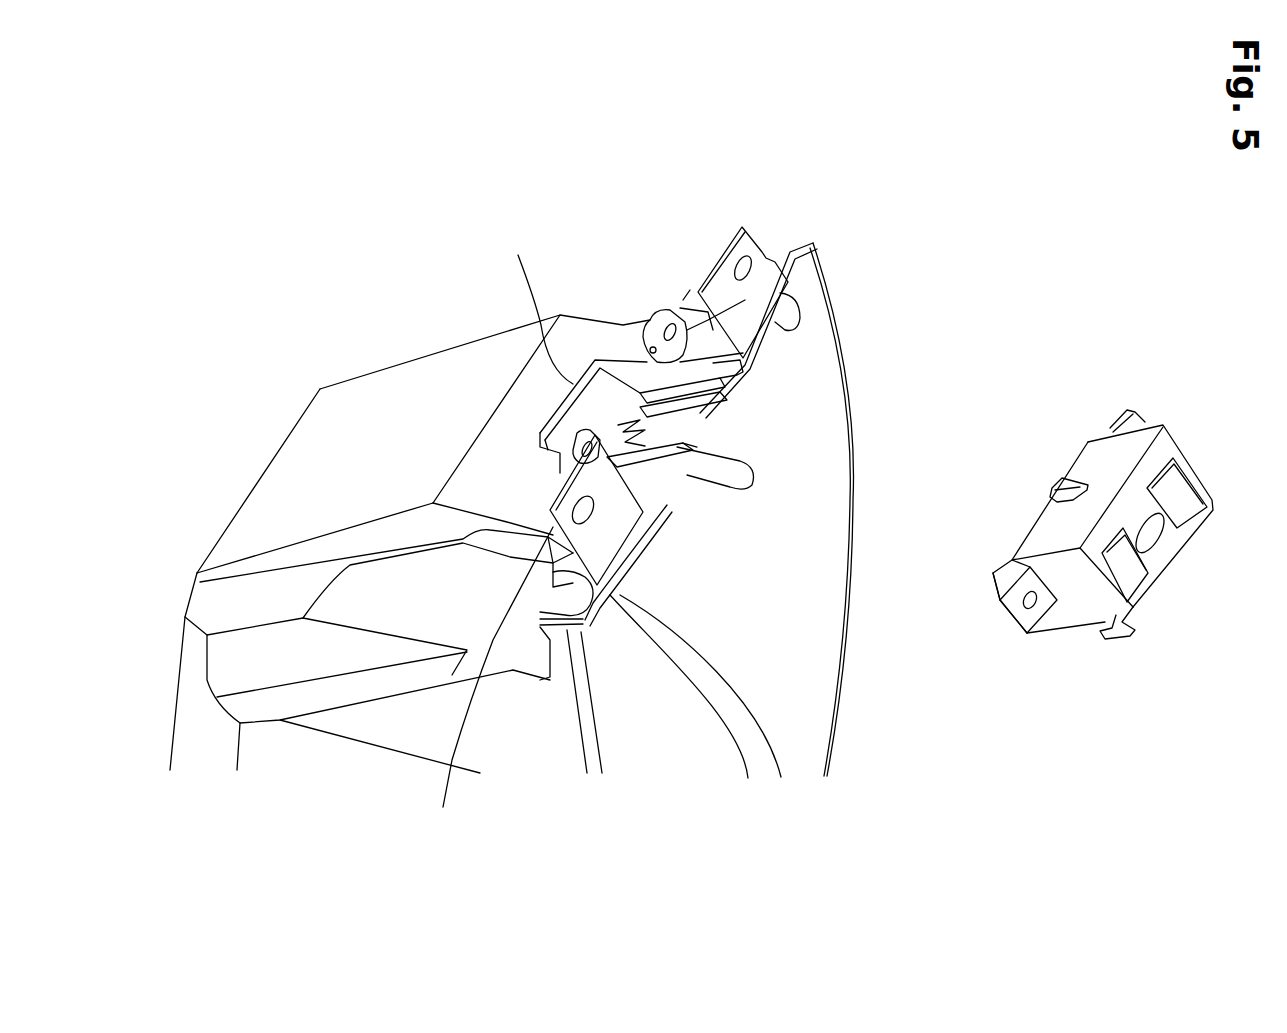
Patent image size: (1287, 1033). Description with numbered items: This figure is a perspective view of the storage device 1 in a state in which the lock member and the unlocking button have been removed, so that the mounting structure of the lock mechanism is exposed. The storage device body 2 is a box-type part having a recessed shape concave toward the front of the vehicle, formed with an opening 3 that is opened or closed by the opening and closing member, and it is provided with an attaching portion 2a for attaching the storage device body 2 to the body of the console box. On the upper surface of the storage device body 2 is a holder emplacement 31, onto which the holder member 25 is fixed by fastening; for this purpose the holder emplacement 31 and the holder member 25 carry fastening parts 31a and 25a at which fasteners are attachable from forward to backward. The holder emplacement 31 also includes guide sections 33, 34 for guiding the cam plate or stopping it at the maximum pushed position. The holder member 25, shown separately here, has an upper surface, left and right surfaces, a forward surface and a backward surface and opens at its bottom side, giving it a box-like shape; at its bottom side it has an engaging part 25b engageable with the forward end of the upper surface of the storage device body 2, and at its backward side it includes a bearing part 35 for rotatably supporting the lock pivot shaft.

The storage device 1 is at (539, 201).
The storage device body 2 is at (403, 352).
The attaching portion 2a is at (763, 255).
The opening 3 is at (840, 720).
The holder emplacement 31 is at (540, 317).
The fastening part 31a is at (652, 303).
The guide section 33 is at (630, 415).
The guide section 34 is at (690, 290).
The holder member 25 is at (1153, 386).
The fastening part 25a is at (1113, 422).
The engaging part 25b is at (1123, 640).
The bearing part 35 is at (1010, 561).